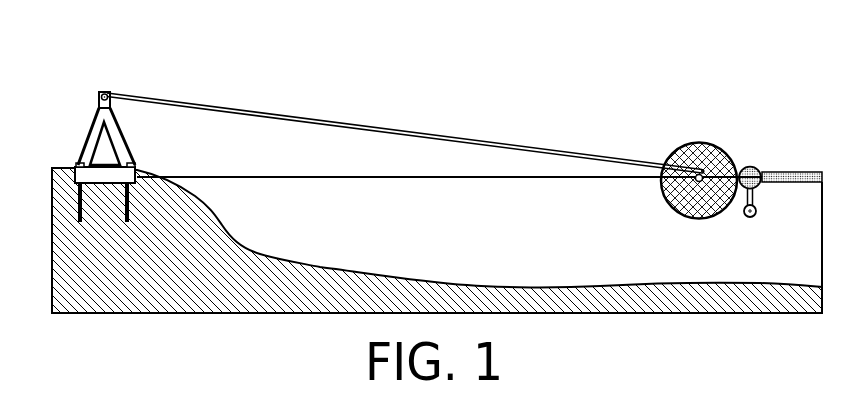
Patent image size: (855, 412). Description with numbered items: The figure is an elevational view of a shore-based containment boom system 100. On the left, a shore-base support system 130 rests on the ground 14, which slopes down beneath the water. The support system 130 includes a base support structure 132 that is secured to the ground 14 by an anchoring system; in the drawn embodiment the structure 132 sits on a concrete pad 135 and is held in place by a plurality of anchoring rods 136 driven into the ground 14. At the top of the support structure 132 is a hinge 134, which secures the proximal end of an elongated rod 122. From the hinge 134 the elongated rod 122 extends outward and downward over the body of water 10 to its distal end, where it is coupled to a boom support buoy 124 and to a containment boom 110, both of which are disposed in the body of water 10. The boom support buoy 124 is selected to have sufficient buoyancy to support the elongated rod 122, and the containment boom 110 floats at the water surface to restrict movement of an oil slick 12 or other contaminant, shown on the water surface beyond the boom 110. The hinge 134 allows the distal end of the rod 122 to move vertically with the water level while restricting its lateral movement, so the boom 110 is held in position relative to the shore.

The containment boom system 100 is at (158, 66).
The body of water 10 is at (347, 176).
The oil slick 12 is at (803, 172).
The ground 14 is at (137, 171).
The containment boom 110 is at (753, 167).
The elongated rod 122 is at (552, 150).
The boom support buoy 124 is at (710, 145).
The shore-base support system 130 is at (94, 142).
The base support structure 132 is at (114, 113).
The hinge 134 is at (104, 91).
The concrete pad 135 is at (99, 160).
The anchoring rods 136 is at (77, 200).